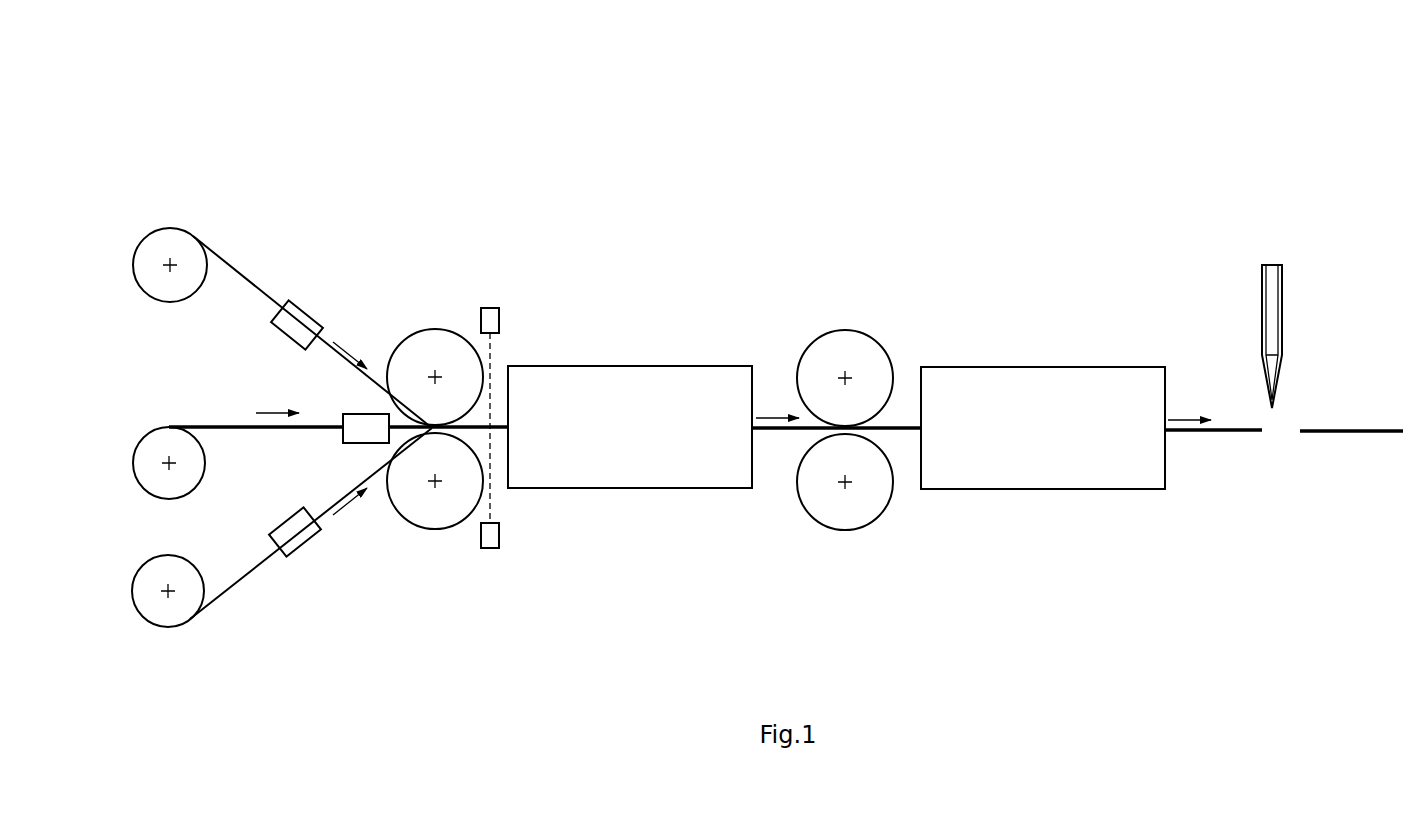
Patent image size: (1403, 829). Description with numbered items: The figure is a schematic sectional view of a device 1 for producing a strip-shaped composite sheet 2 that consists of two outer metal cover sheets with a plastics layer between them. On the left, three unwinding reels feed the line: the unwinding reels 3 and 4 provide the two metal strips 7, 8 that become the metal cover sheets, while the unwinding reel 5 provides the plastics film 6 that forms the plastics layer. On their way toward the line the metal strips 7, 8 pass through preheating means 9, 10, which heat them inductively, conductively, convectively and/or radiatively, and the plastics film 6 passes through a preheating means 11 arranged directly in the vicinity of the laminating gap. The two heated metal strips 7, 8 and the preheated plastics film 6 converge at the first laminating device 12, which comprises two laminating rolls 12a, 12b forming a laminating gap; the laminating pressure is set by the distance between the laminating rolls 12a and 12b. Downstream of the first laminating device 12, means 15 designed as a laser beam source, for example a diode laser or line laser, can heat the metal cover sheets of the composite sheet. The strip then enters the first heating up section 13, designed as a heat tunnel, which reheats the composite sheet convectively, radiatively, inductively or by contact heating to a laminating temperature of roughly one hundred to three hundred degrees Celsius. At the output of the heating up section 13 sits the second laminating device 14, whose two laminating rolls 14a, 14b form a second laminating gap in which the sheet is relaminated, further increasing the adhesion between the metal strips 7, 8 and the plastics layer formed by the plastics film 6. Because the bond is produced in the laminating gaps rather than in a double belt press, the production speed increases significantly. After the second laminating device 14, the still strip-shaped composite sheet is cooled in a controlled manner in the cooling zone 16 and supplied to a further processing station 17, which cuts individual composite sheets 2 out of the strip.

The device 1 is at (1258, 146).
The composite sheet 2 is at (1370, 431).
The unwinding reel 3 is at (162, 243).
The unwinding reel 4 is at (160, 612).
The unwinding reel 5 is at (160, 432).
The plastics film 6 is at (222, 426).
The metal strip 7 is at (238, 276).
The metal strip 8 is at (238, 585).
The preheating means 9 is at (301, 322).
The preheating means 10 is at (299, 537).
The preheating means 11 is at (357, 417).
The first laminating device 12 is at (442, 401).
The laminating roll 12a is at (420, 331).
The laminating roll 12b is at (423, 518).
The first heating up section 13 is at (630, 427).
The second laminating device 14 is at (856, 402).
The laminating roll 14a is at (830, 332).
The laminating roll 14b is at (832, 518).
The means for heating the metal cover sheets 15 is at (498, 315).
The cooling zone 16 is at (1043, 428).
The further processing station 17 is at (1274, 297).